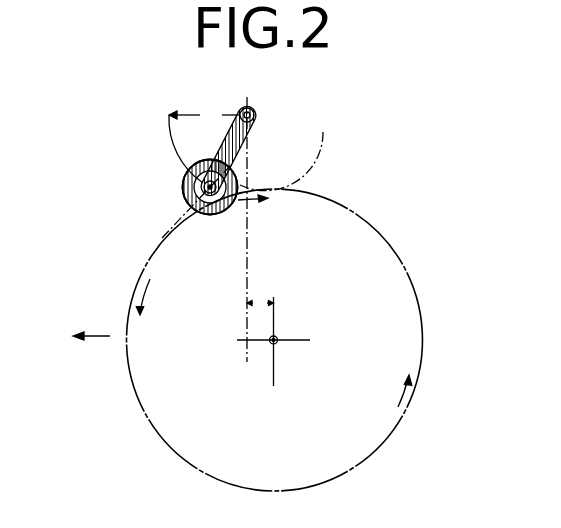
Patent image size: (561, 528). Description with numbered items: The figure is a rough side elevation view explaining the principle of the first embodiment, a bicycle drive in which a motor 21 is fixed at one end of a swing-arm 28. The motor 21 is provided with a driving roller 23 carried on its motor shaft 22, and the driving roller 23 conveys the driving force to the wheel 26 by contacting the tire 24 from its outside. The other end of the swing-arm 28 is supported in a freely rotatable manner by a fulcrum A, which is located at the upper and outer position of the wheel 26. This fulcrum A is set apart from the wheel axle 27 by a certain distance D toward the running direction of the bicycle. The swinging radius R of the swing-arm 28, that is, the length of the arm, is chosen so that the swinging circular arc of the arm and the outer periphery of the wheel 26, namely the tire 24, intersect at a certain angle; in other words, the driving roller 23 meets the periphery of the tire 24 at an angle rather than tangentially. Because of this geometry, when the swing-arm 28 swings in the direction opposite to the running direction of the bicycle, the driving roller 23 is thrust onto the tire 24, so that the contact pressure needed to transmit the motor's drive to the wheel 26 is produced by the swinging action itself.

The motor 21 is at (192, 172).
The motor shaft 22 is at (239, 176).
The driving roller 23 is at (196, 203).
The tire 24 is at (292, 334).
The wheel 26 is at (375, 227).
The wheel axle 27 is at (278, 336).
The swing-arm 28 is at (238, 141).
The fulcrum A is at (253, 111).
The swinging radius R is at (204, 141).
The distance D is at (260, 305).